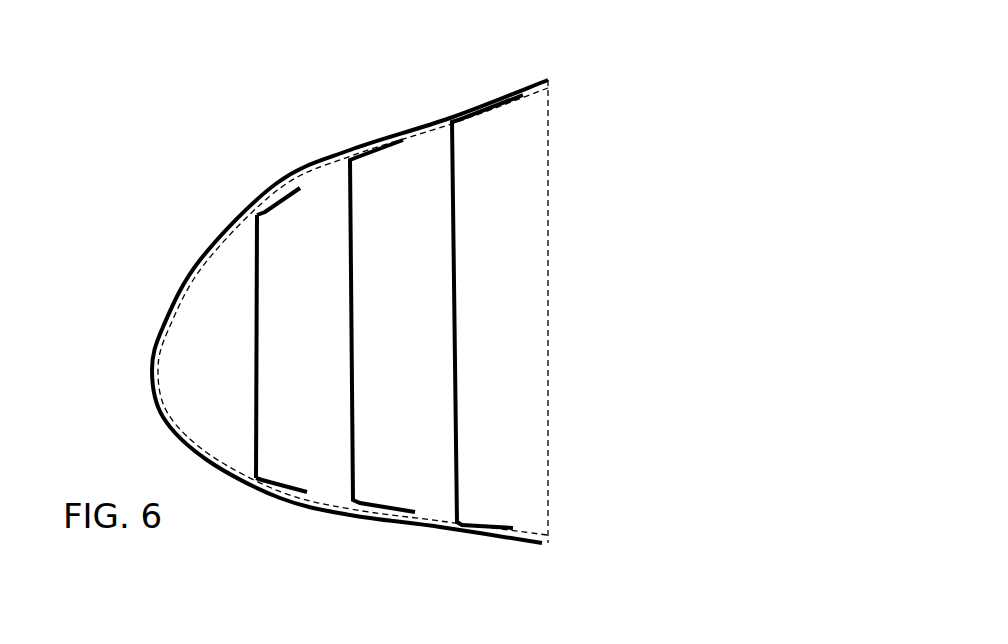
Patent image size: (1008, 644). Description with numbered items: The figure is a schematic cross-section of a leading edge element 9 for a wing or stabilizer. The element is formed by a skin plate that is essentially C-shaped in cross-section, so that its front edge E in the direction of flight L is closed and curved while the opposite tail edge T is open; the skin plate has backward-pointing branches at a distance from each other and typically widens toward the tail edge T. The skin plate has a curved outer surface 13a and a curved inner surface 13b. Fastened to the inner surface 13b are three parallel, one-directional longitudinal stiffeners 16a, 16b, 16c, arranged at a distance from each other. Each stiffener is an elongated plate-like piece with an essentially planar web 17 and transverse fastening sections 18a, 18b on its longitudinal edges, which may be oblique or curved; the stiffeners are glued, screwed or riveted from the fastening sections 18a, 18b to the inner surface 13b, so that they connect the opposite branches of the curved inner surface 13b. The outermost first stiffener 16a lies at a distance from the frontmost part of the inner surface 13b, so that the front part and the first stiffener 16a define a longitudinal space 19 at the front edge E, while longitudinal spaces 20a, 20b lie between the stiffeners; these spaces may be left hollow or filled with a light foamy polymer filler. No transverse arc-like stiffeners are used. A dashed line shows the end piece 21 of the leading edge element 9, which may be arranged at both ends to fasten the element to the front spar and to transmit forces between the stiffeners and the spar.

The leading edge element 9 is at (294, 301).
The outer surface 13a is at (153, 338).
The inner surface 13b is at (157, 373).
The first stiffener 16a is at (208, 353).
The second stiffener 16b is at (333, 470).
The third stiffener 16c is at (441, 500).
The web 17 is at (257, 301).
The fastening section 18a is at (274, 195).
The fastening section 18b is at (242, 549).
The longitudinal space 19 is at (228, 380).
The longitudinal space 20a is at (330, 380).
The longitudinal space 20b is at (429, 381).
The end piece 21 is at (550, 168).
The front edge E is at (128, 186).
The tail edge T is at (690, 219).
The direction of flight L is at (745, 332).